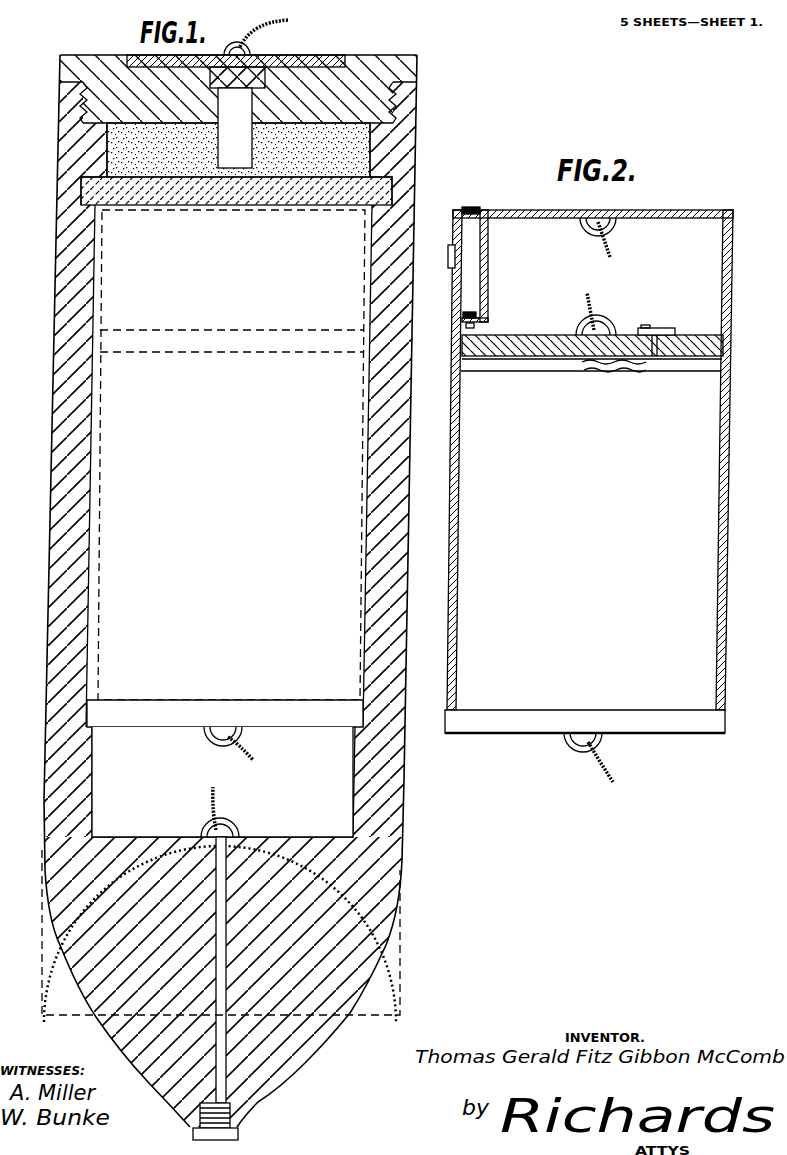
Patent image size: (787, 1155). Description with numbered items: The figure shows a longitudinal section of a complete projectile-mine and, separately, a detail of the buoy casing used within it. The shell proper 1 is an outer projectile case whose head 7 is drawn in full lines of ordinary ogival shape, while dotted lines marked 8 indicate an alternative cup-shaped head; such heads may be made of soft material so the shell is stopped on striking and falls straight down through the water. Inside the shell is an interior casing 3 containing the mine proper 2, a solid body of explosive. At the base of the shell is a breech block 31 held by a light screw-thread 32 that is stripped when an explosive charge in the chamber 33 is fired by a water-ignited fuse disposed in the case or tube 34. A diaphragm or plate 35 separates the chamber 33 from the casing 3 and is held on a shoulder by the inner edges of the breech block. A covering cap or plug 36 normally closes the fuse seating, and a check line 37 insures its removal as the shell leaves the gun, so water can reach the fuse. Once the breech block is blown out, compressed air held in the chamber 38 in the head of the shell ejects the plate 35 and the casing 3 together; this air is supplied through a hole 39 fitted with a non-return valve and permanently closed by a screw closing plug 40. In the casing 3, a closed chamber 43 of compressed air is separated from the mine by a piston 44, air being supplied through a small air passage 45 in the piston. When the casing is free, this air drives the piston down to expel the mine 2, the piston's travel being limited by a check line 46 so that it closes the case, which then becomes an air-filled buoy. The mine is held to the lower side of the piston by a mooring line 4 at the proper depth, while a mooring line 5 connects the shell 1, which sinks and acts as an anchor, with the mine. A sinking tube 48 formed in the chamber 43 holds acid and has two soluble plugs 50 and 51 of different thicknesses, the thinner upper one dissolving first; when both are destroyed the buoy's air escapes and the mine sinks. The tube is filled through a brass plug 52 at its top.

In FIG. 1, the shell proper 1 is at (407, 258).
In FIG. 1, the mine proper 2 is at (118, 388).
In FIG. 2, the mine proper 2 is at (692, 497).
In FIG. 1, the casing 3 is at (98, 435).
In FIG. 2, the casing 3 is at (735, 285).
In FIG. 2, the mooring line 4 is at (723, 370).
In FIG. 1, the mooring line 5 is at (258, 752).
In FIG. 2, the mooring line 5 is at (607, 764).
In FIG. 1, the head 7 is at (75, 880).
In FIG. 1, the cup-shaped head 8 is at (47, 960).
In FIG. 1, the breech block 31 is at (90, 62).
In FIG. 1, the screw-thread 32 is at (417, 100).
In FIG. 1, the chamber 33 is at (350, 153).
In FIG. 1, the case or tube 34 is at (250, 148).
In FIG. 1, the diaphragm or plate 35 is at (356, 190).
In FIG. 1, the covering cap or plug 36 is at (333, 60).
In FIG. 1, the check line 37 is at (290, 22).
In FIG. 1, the chamber 38 is at (332, 780).
In FIG. 1, the hole 39 is at (218, 1040).
In FIG. 1, the screw closing plug 40 is at (230, 1120).
In FIG. 2, the chamber 43 is at (703, 305).
In FIG. 2, the piston 44 is at (505, 336).
In FIG. 2, the air passage 45 is at (676, 333).
In FIG. 2, the check line 46 is at (612, 243).
In FIG. 2, the sinking tube 48 is at (478, 247).
In FIG. 2, the soluble plug 50 is at (450, 244).
In FIG. 2, the soluble plug 51 is at (467, 302).
In FIG. 2, the plug 52 is at (478, 208).